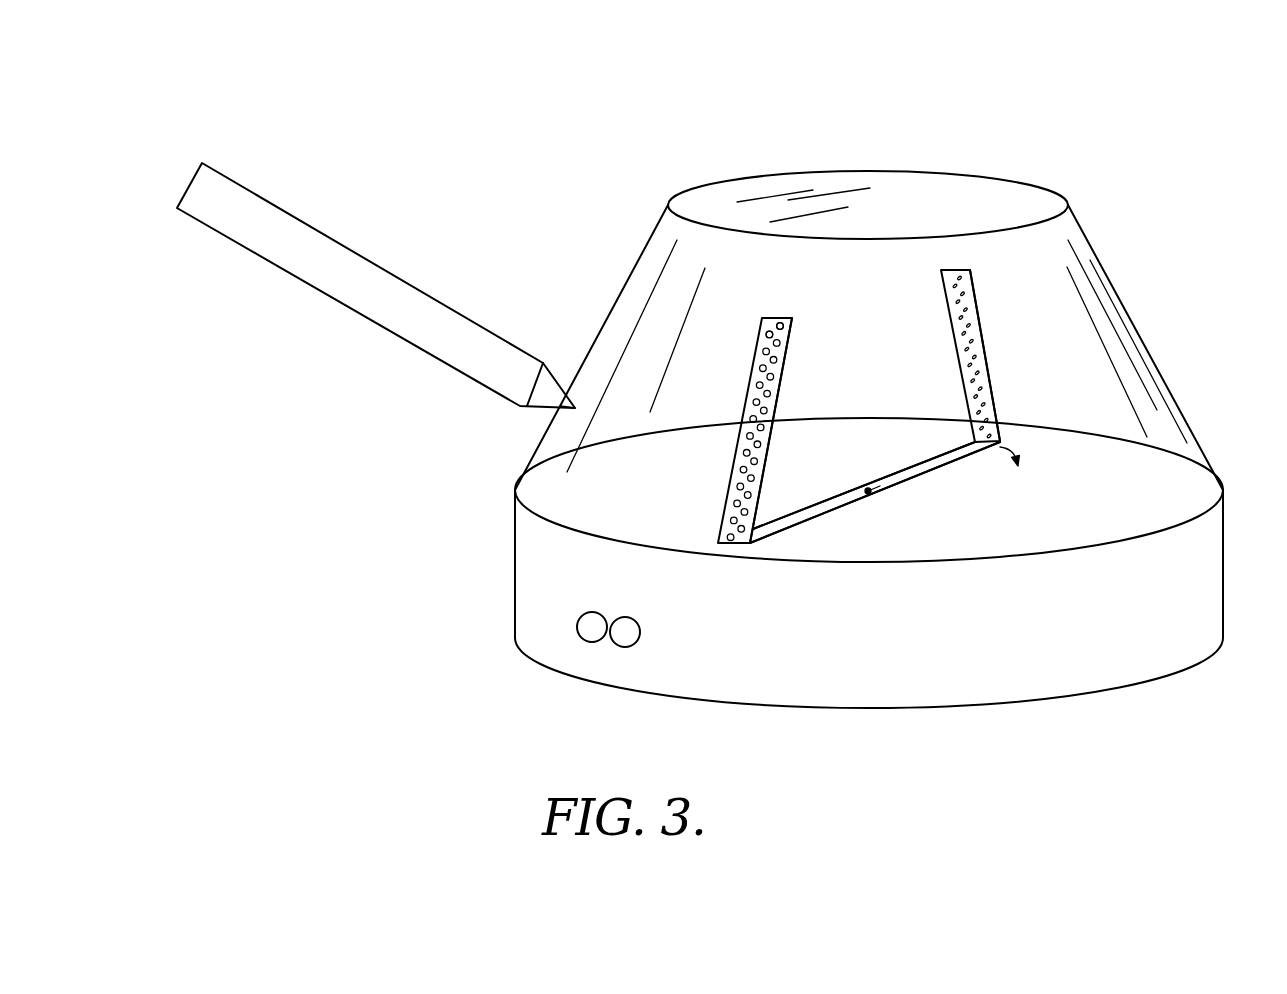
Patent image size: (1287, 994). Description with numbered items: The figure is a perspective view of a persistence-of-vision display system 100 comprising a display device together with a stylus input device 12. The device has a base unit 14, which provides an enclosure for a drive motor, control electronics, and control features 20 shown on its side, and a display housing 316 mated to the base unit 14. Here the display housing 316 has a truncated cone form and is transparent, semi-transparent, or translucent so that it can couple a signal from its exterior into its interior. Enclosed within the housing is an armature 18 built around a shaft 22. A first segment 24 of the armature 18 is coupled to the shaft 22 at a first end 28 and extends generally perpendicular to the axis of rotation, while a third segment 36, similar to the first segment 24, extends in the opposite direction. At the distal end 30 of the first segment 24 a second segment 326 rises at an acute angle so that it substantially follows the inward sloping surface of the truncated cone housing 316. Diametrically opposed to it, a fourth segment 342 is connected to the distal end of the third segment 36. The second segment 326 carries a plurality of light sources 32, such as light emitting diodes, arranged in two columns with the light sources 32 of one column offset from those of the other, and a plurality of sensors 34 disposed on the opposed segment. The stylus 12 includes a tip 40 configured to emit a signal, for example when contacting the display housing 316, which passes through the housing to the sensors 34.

The input system 100 is at (486, 97).
The stylus input device 12 is at (433, 358).
The tip 40 is at (575, 407).
The base unit 14 is at (513, 596).
The control features 20 is at (633, 618).
The display housing 316 is at (1045, 187).
The sensors 34 is at (970, 275).
The fourth segment 342 is at (992, 377).
The distal end 30 is at (703, 540).
The light sources 32 is at (780, 334).
The second segment 326 is at (781, 382).
The armature 18 is at (840, 508).
The shaft 22 is at (866, 488).
The first segment 24 is at (797, 525).
The first end 28 is at (880, 500).
The third segment 36 is at (934, 460).